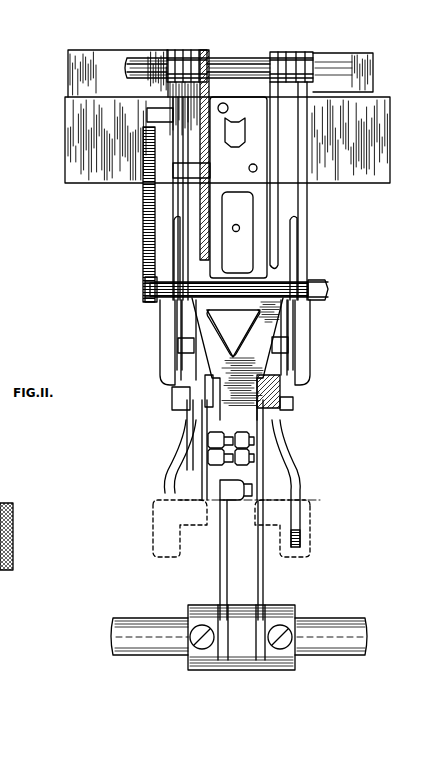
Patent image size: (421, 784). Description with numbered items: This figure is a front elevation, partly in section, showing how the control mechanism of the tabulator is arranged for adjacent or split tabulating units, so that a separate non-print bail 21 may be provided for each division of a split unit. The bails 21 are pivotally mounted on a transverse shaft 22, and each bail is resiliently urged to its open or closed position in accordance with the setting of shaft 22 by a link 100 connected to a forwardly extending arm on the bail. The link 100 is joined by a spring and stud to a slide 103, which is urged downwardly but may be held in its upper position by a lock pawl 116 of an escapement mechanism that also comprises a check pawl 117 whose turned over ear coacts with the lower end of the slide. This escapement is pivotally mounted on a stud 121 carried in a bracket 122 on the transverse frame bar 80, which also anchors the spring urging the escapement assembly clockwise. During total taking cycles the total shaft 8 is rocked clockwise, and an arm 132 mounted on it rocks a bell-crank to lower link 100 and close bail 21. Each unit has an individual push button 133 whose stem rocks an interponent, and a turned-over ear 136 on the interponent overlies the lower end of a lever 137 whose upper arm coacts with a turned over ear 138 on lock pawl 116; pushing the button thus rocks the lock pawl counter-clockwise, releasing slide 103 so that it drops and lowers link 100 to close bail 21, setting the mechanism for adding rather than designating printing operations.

The total shaft 8 is at (140, 627).
The non-print bail 21 is at (113, 60).
The transverse shaft 22 is at (229, 58).
The transverse frame bar 80 is at (372, 118).
The link 100 is at (203, 52).
The slide 103 is at (170, 208).
The lock pawl 116 is at (172, 252).
The check pawl 117 is at (160, 360).
The stud 121 is at (310, 285).
The bracket 122 is at (250, 100).
The arm 132 is at (216, 588).
The push button 133 is at (4, 503).
The turned-over ear 136 is at (155, 528).
The lever 137 is at (180, 470).
The turned over ear 138 is at (180, 343).